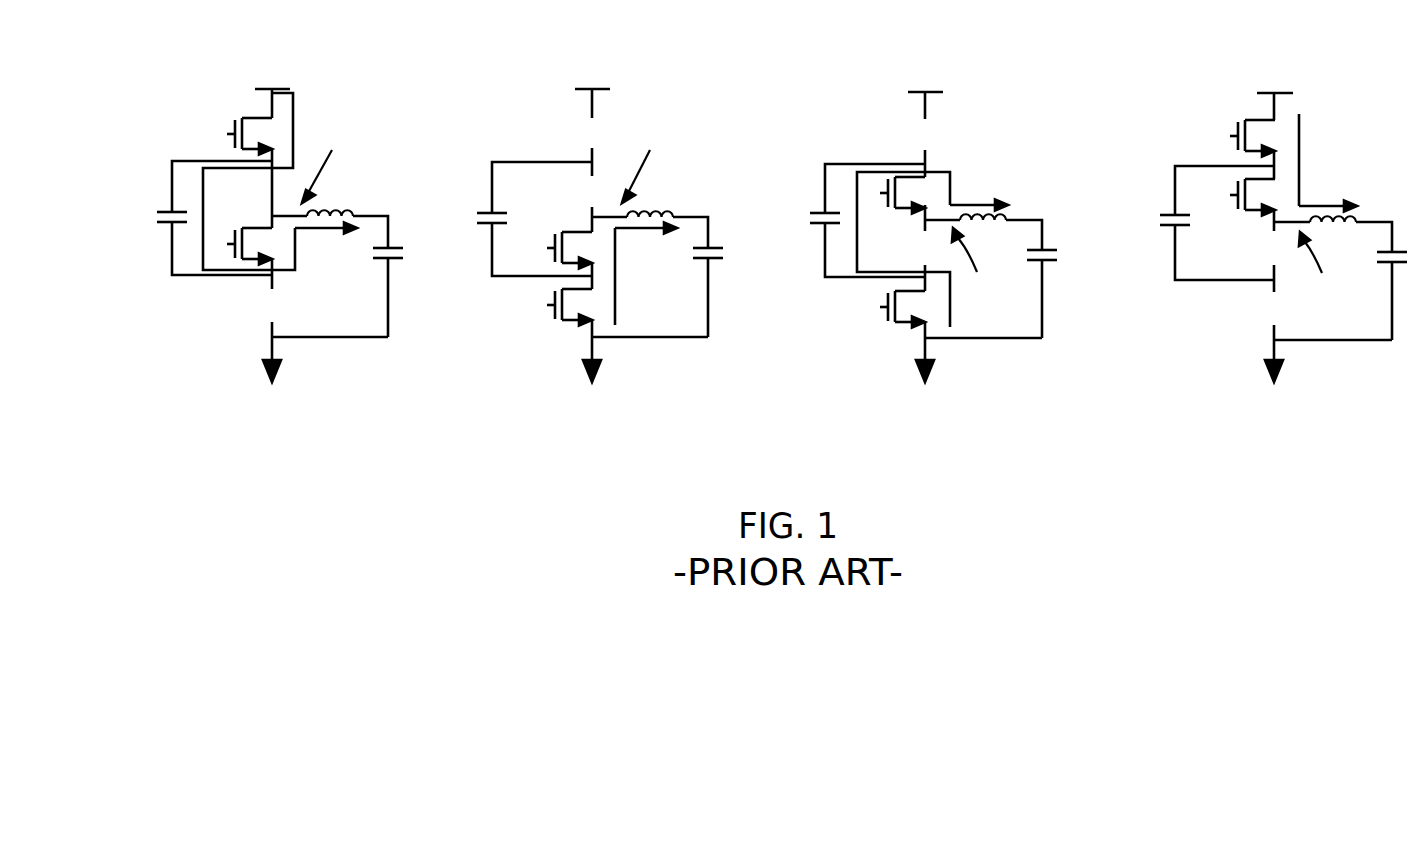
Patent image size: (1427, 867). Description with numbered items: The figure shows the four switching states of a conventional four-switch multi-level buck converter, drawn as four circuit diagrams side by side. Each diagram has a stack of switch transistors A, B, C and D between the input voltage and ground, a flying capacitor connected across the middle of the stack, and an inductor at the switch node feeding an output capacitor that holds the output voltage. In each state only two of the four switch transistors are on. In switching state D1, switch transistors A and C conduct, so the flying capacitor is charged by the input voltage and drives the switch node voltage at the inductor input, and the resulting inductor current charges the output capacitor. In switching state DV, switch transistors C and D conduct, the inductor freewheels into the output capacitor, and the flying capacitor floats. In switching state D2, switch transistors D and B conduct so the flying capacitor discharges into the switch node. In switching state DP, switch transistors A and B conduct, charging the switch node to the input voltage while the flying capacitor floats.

The switching state D1 is at (263, 259).
The switching state DV is at (583, 260).
The switching state D2 is at (917, 261).
The switching state DP is at (1267, 261).